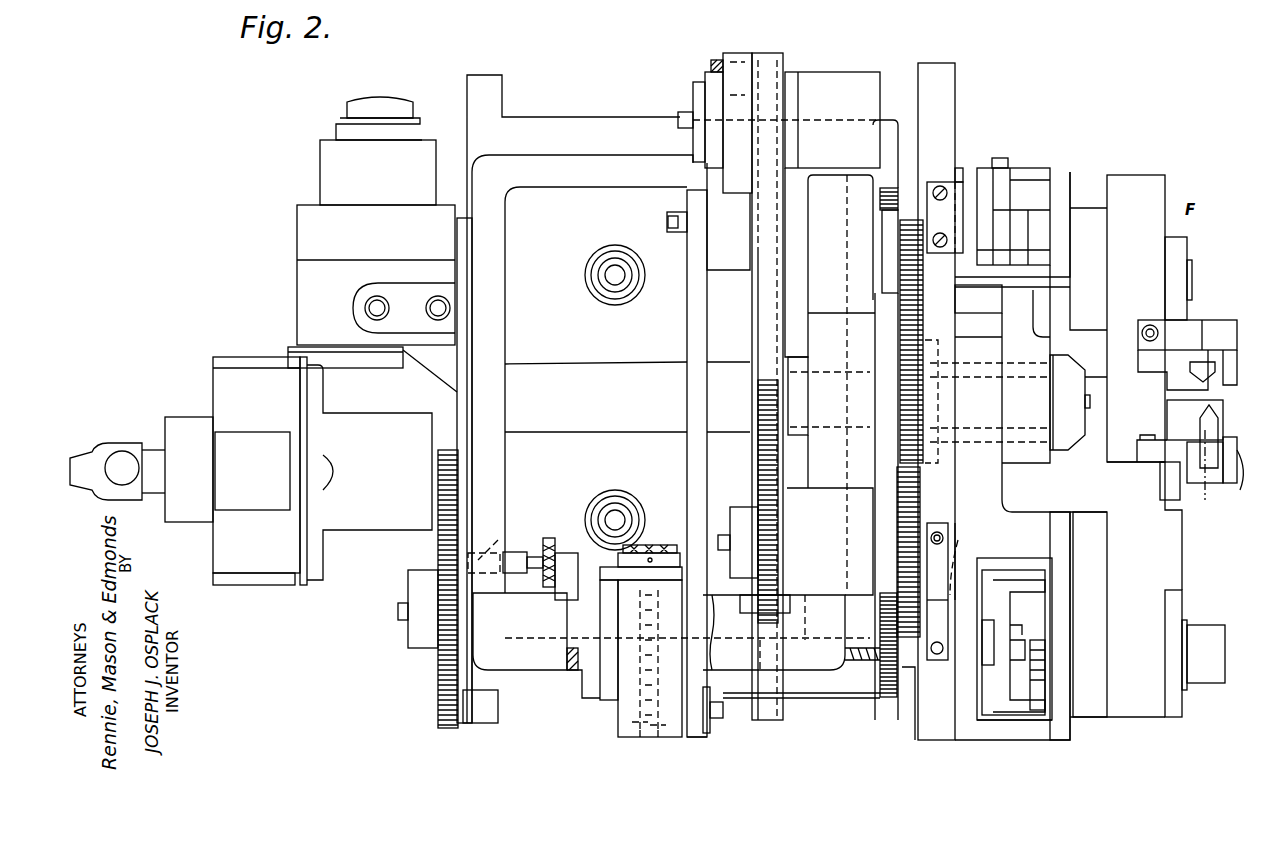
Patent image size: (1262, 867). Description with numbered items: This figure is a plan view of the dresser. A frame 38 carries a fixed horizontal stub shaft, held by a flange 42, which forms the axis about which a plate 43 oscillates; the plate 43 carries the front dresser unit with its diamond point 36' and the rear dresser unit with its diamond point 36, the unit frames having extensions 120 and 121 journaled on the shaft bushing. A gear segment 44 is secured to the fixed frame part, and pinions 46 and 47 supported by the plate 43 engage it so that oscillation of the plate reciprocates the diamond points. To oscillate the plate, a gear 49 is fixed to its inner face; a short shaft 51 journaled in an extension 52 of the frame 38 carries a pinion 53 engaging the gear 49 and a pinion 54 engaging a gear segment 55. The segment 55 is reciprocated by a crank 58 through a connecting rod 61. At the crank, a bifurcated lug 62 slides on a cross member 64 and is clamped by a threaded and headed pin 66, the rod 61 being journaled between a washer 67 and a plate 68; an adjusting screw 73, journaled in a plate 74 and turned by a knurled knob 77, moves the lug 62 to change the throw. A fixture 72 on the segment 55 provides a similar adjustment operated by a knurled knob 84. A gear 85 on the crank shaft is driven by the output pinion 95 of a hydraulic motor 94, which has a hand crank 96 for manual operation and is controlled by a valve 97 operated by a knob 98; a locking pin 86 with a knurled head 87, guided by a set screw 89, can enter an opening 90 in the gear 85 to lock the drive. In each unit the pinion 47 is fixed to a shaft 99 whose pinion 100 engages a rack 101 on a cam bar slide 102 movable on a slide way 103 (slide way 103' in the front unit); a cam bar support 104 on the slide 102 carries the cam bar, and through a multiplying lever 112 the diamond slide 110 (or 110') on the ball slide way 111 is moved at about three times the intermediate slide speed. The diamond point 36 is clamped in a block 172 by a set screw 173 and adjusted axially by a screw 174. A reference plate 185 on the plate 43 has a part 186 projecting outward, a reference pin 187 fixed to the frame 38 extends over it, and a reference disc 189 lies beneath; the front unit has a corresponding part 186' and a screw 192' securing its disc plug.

The diamond point 36 is at (1193, 450).
The diamond point 36' is at (1190, 366).
The frame 38 is at (486, 75).
The flange 42 is at (885, 305).
The plate 43 is at (950, 128).
The gear segment 44 is at (882, 228).
The pinion 46 is at (880, 198).
The pinion 47 is at (888, 698).
The gear 49 is at (918, 292).
The short shaft 51 is at (933, 530).
The extension 52 is at (832, 500).
The pinion 53 is at (940, 600).
The pinion 54 is at (758, 497).
The gear segment 55 is at (760, 447).
The crank 58 is at (622, 715).
The connecting rod 61 is at (690, 331).
The bifurcated lug 62 is at (640, 737).
The cross member 64 is at (662, 737).
The threaded and headed pin 66 is at (718, 718).
The washer 67 is at (712, 733).
The plate 68 is at (695, 737).
The fixture 72 is at (732, 270).
The adjusting screw 73 is at (603, 659).
The plate 74 is at (615, 575).
The knurled knob 77 is at (660, 545).
The knurled knob 84 is at (712, 60).
The gear 85 is at (450, 720).
The locking pin 86 is at (527, 556).
The knurled head 87 is at (547, 538).
The set screw 89 is at (500, 530).
The opening 90 is at (468, 556).
The hydraulic motor 94 is at (297, 575).
The output pinion 95 is at (445, 450).
The hand crank 96 is at (118, 445).
The valve 97 is at (310, 238).
The knob 98 is at (348, 106).
The shaft 99 is at (1003, 727).
The pinion 100 is at (1033, 618).
The rack 101 is at (990, 622).
The cam bar slide 102 is at (1005, 570).
The slide way 103 is at (1033, 637).
The slide way 103' is at (1016, 241).
The cam bar support 104 is at (1045, 665).
The diamond slide 110 is at (1157, 589).
The diamond slide 110' is at (1137, 318).
The ball slide way 111 is at (1093, 720).
The lever 112 is at (1182, 717).
The extension 120 is at (1015, 520).
The extension 121 is at (1052, 452).
The block 172 is at (1208, 330).
The set screw 173 is at (1240, 490).
The screw 174 is at (1210, 483).
The reference plate 185 is at (952, 523).
The part 186 is at (972, 552).
The part 186' is at (998, 158).
The reference pin 187 is at (926, 664).
The reference disc 189 is at (969, 558).
The screw 192' is at (973, 154).